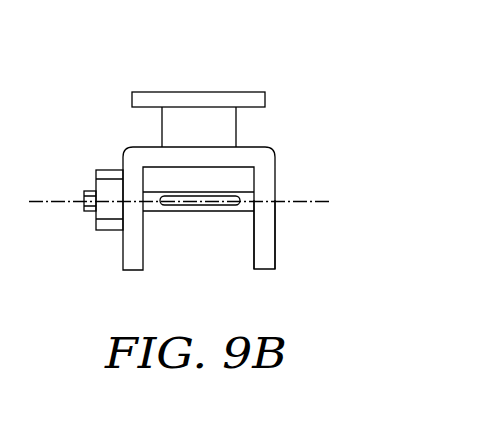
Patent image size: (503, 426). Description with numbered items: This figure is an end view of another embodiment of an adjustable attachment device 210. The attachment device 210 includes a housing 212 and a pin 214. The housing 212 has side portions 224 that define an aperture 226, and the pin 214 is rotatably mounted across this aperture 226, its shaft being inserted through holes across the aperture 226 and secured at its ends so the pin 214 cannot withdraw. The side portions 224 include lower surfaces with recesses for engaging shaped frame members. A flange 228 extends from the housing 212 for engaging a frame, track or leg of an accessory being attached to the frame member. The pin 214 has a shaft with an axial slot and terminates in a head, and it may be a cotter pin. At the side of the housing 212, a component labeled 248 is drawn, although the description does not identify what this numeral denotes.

The adjustable attachment device 210 is at (285, 88).
The housing 212 is at (280, 166).
The pin 214 is at (188, 211).
The side portions 224 is at (276, 243).
The aperture 226 is at (254, 242).
The flange 228 is at (180, 92).
The bolt 248 is at (55, 202).